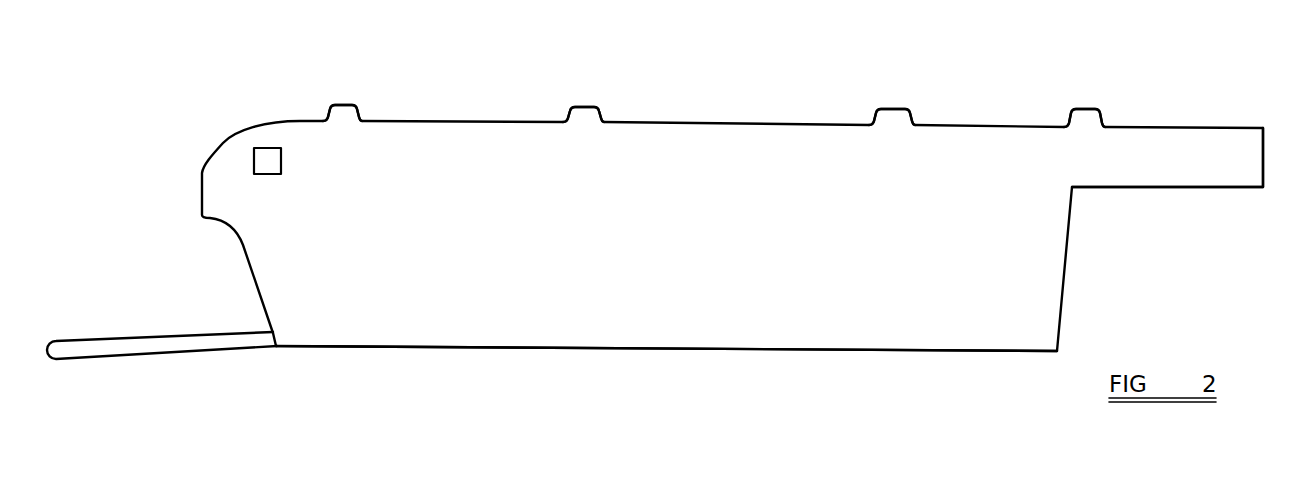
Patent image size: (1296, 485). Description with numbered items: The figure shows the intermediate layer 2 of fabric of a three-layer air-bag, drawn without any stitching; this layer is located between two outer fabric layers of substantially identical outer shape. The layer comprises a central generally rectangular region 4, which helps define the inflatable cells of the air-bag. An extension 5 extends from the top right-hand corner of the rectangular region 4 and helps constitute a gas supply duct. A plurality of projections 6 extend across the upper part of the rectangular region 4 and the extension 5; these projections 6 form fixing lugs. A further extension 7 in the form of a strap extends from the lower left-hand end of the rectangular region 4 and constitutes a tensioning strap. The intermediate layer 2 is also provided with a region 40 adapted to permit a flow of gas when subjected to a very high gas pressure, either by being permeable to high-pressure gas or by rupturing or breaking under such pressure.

The intermediate layer 2 is at (965, 312).
The central generally rectangular region 4 is at (730, 302).
The extension 5 is at (1168, 172).
The projections 6 is at (342, 113).
The further extension 7 is at (224, 340).
The region 40 is at (253, 163).